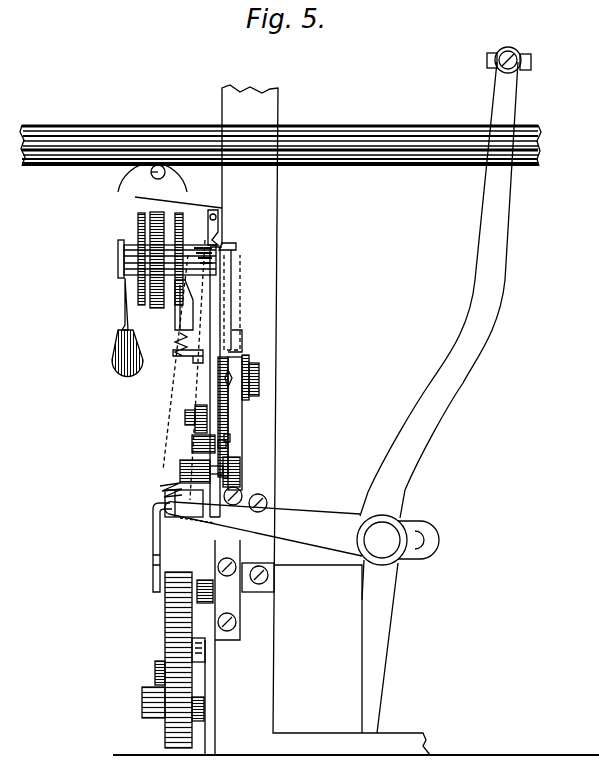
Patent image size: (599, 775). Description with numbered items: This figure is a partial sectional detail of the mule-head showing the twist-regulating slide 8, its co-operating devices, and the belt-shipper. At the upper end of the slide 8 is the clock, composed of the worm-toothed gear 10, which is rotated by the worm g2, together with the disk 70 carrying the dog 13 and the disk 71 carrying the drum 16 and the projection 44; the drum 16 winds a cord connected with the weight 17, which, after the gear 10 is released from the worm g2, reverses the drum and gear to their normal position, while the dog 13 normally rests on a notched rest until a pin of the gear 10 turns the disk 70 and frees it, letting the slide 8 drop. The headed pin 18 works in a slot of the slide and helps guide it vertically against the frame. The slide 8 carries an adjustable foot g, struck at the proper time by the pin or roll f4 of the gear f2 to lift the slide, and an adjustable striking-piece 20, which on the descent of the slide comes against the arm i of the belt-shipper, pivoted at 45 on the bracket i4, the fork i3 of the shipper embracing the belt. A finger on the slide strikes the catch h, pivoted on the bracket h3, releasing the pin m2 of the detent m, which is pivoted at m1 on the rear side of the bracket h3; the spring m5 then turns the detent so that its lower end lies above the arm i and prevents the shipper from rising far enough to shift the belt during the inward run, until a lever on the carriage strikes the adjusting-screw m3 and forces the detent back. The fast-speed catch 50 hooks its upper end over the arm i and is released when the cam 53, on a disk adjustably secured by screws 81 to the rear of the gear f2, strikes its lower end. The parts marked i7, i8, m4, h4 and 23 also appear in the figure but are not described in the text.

The pivot bracket i8 is at (487, 58).
The curved arm i7 is at (439, 290).
The arm of the belt-shipper i is at (263, 529).
The pivot of the belt-shipper 45 is at (398, 540).
The fork of the shipper-lever i3 is at (380, 646).
The bracket i4 is at (312, 565).
The worm g2 is at (132, 195).
The disk 71 is at (138, 215).
The worm-toothed gear 10 is at (160, 212).
The disk 70 is at (186, 213).
The drum 16 is at (118, 240).
The projection 44 is at (127, 300).
The weight 17 is at (112, 350).
The dog 13 is at (182, 322).
The twist-regulating slide 8 is at (212, 385).
The spring m5 is at (236, 336).
The bracket h3 is at (222, 415).
The detent m is at (237, 422).
The pivot of the detent m1 is at (260, 368).
The gear m4 is at (255, 378).
The pin 23 is at (240, 438).
The catch h is at (218, 458).
The adjusting-screw m3 is at (238, 492).
The headed pin 18 is at (185, 415).
The gear h4 is at (195, 445).
The pin of the detent m2 is at (195, 466).
The adjustable striking-piece 20 is at (172, 490).
The adjustable foot g is at (155, 560).
The gear f2 is at (165, 625).
The screws 81 is at (155, 670).
The pin or roll f4 is at (143, 710).
The fast-speed catch 50 is at (206, 650).
The cam 53 is at (204, 713).